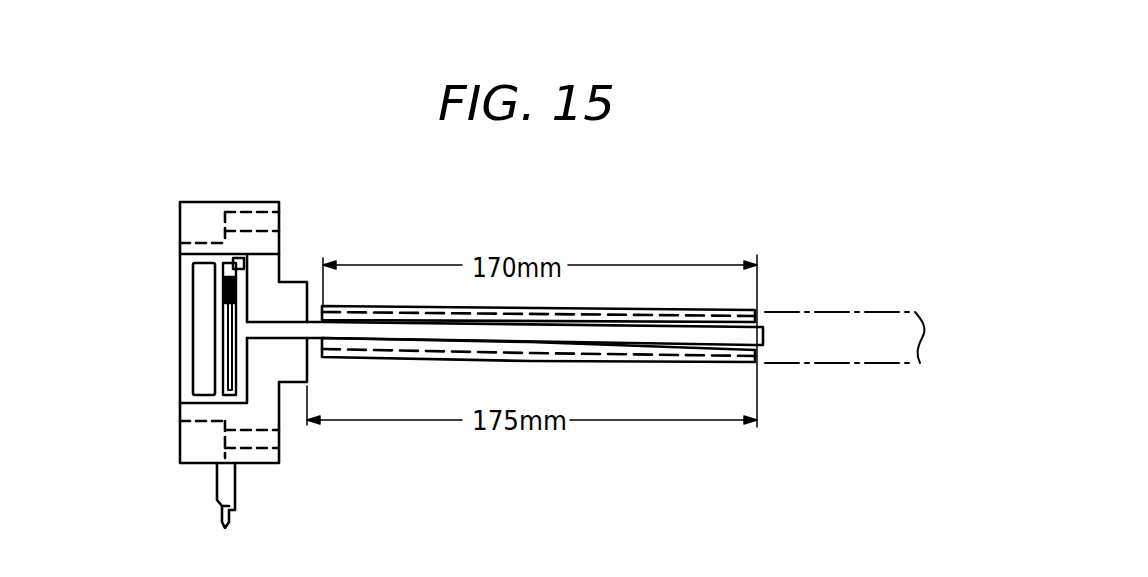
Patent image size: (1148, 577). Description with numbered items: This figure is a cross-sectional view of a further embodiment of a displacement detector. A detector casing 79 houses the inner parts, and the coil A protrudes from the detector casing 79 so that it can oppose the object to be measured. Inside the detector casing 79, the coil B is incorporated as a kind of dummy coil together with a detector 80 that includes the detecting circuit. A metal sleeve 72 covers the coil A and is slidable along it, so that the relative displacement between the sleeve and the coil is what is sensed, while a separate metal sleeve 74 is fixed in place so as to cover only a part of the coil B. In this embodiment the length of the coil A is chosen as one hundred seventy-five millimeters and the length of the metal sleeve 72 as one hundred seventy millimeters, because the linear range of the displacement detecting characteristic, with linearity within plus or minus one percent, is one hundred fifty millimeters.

The detector casing 79 is at (269, 203).
The detector 80 is at (205, 289).
The metal sleeve 74 is at (241, 257).
The metal sleeve 72 is at (362, 284).
The coil A is at (643, 342).
The coil B is at (232, 350).